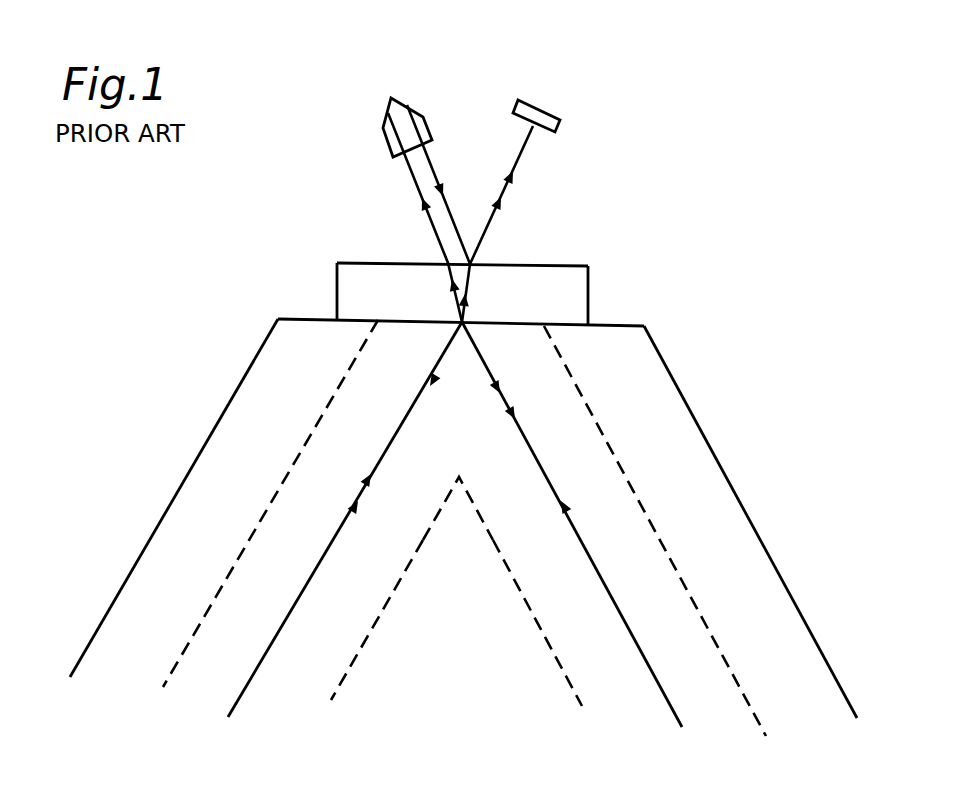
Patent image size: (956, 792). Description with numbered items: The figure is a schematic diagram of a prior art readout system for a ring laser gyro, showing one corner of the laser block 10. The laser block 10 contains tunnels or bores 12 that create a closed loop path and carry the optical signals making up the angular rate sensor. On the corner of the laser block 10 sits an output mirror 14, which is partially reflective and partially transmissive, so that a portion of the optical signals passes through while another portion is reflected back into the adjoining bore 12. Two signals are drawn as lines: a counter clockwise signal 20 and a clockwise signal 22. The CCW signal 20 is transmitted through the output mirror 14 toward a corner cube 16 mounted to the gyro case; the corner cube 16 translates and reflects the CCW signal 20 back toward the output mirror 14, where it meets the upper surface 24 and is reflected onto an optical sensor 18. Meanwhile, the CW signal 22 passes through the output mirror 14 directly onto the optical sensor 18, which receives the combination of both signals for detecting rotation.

The laser block 10 is at (606, 355).
The bores 12 is at (262, 583).
The output mirror 14 is at (582, 295).
The corner cube 16 is at (383, 129).
The optical sensor 18 is at (550, 123).
The counter clockwise signal 20 is at (535, 452).
The clockwise signal 22 is at (387, 447).
The upper surface 24 is at (560, 264).